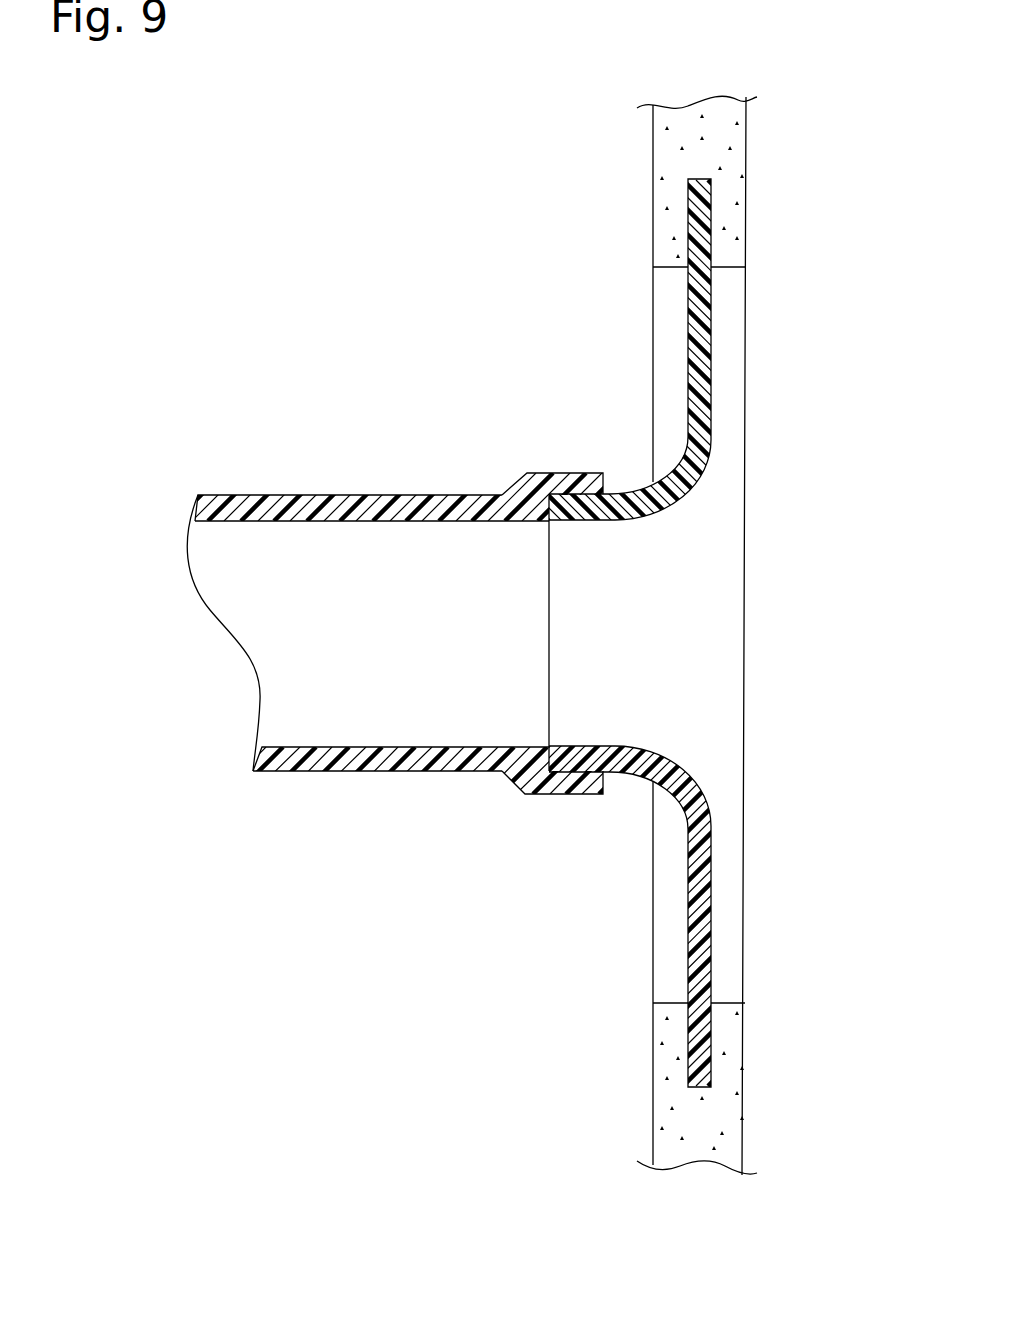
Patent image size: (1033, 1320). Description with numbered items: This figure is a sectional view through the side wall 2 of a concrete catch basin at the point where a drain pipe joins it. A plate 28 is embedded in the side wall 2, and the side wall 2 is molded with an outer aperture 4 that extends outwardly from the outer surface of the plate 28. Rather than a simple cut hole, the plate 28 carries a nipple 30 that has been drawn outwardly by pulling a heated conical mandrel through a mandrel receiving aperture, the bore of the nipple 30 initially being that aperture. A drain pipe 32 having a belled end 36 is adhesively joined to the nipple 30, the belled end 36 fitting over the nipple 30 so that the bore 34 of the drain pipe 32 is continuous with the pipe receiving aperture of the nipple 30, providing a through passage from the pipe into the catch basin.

The side wall 2 is at (733, 160).
The outer aperture 4 is at (725, 757).
The plate 28 is at (700, 350).
The nipple 30 is at (650, 620).
The drain pipe 32 is at (355, 762).
The bore 34 is at (313, 646).
The belled end 36 is at (550, 794).